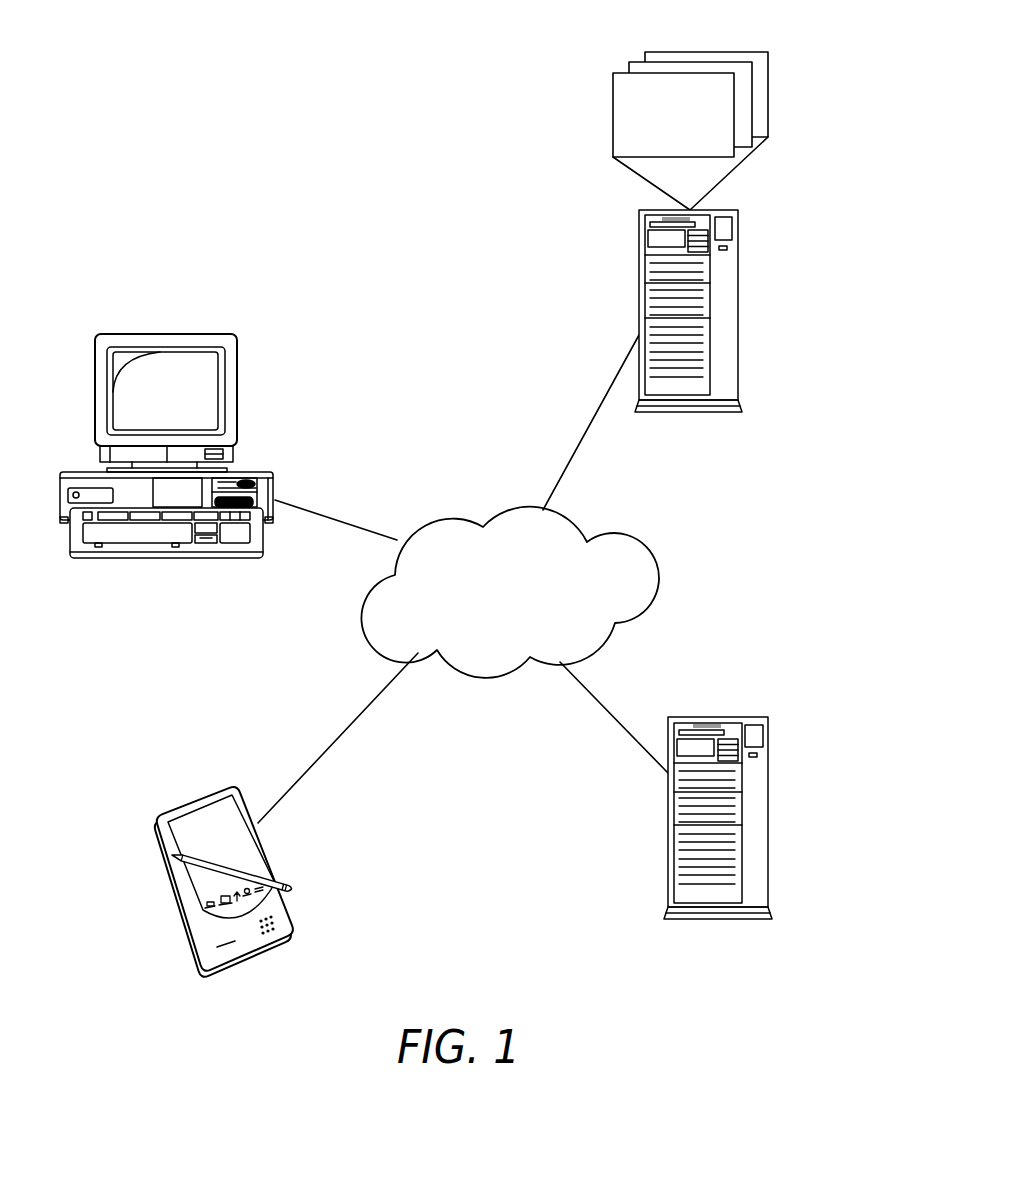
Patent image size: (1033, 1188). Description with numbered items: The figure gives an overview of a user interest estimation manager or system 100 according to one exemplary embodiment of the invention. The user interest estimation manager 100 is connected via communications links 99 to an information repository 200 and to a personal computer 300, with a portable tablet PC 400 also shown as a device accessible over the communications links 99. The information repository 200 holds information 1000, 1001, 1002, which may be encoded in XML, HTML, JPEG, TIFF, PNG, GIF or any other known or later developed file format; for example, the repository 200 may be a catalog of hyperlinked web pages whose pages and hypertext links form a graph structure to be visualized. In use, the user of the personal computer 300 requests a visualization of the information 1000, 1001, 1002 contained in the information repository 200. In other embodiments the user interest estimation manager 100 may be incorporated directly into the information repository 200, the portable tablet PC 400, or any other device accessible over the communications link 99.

The communications links 99 is at (343, 521).
The user interest estimation manager 100 is at (707, 717).
The information repository 200 is at (639, 315).
The personal computer 300 is at (277, 485).
The portable tablet PC 400 is at (270, 858).
The information 1000 is at (612, 118).
The information 1001 is at (640, 62).
The information 1002 is at (710, 50).